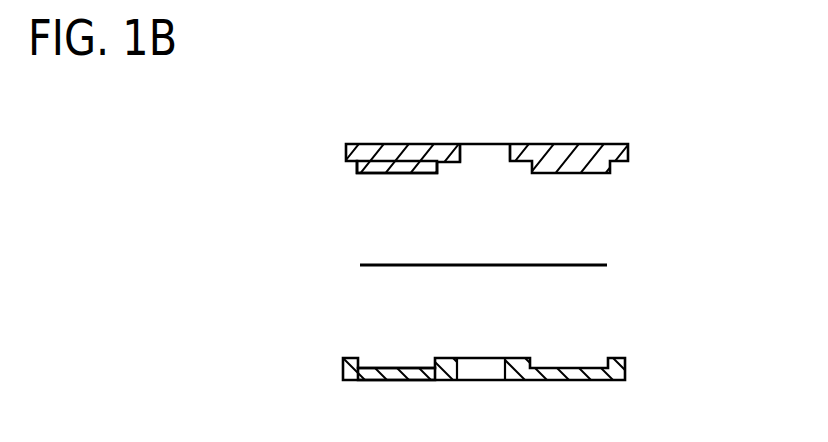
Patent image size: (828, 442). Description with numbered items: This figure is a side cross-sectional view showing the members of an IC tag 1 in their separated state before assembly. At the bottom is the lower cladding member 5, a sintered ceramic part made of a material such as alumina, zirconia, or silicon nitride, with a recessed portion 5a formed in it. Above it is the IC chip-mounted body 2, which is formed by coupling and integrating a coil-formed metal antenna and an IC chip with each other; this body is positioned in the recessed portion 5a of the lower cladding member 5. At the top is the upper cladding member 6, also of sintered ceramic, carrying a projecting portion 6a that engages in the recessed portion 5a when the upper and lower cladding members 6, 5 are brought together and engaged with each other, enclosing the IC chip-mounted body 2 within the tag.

The IC tag 1 is at (688, 118).
The IC chip-mounted body 2 is at (593, 265).
The lower cladding member 5 is at (567, 380).
The recessed portion 5a is at (373, 367).
The upper cladding member 6 is at (581, 144).
The projecting portion 6a is at (377, 173).